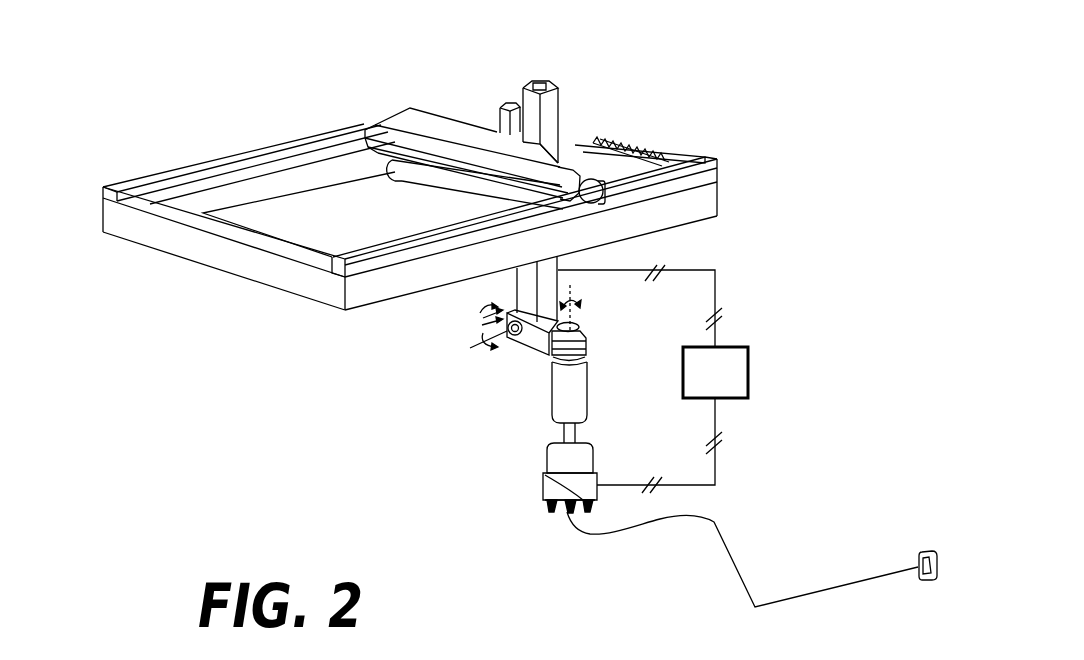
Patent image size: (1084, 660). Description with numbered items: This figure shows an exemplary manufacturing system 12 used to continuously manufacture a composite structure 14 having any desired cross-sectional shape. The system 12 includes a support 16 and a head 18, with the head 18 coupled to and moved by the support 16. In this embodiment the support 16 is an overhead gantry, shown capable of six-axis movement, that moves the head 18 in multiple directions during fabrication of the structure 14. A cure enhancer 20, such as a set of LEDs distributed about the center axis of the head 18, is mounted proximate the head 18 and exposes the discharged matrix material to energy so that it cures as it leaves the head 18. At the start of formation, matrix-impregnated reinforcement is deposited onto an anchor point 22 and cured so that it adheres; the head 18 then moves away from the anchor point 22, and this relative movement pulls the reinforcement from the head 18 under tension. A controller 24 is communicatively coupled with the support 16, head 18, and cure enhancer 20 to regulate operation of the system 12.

The system 12 is at (178, 116).
The composite structure 14 is at (714, 522).
The support 16 is at (703, 202).
The head 18 is at (573, 456).
The cure enhancer 20 is at (557, 503).
The anchor point 22 is at (927, 548).
The controller 24 is at (727, 385).